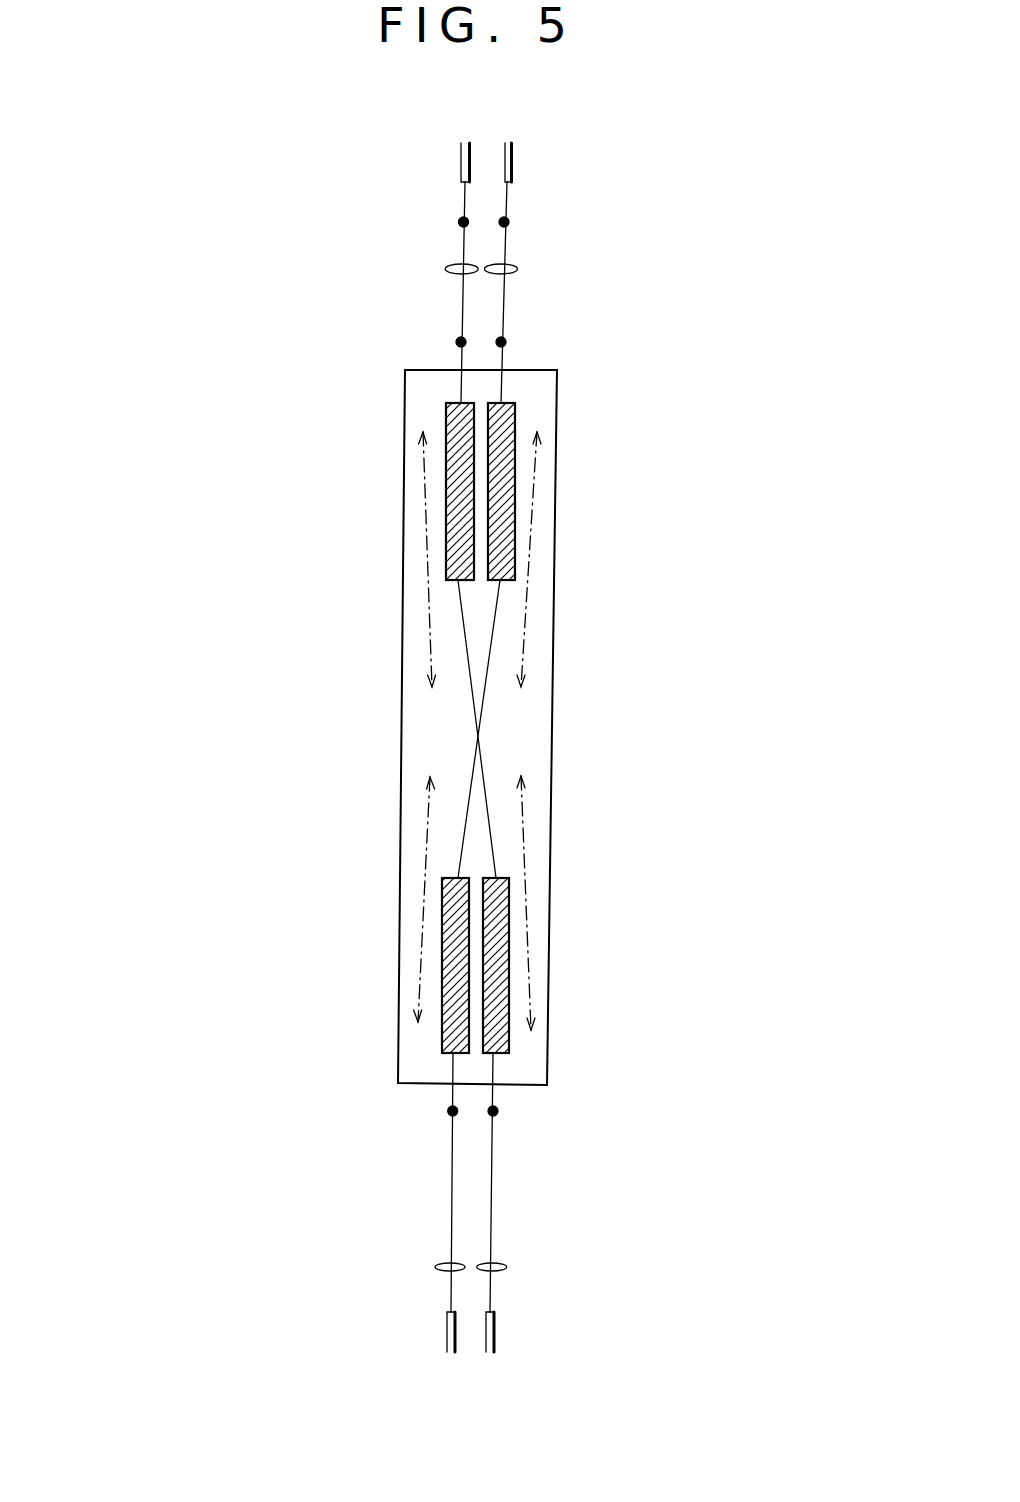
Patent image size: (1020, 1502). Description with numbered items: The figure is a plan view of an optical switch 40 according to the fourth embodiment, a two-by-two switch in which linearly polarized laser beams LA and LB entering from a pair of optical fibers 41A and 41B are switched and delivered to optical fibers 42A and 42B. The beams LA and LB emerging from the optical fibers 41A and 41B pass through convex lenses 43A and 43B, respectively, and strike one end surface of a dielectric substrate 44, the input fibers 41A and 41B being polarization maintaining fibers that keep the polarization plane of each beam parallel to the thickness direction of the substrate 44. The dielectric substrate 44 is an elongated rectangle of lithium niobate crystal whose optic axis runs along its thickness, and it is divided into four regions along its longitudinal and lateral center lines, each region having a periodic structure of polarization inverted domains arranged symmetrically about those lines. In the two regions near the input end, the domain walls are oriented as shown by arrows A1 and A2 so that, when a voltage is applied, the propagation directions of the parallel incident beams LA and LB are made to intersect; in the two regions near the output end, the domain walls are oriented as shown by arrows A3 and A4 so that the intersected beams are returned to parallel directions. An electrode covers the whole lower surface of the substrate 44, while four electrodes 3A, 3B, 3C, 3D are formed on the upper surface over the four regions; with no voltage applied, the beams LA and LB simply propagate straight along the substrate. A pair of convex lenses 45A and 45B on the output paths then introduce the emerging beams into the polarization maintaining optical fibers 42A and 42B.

The optical switch 40 is at (200, 1263).
The optical fiber 41A is at (461, 157).
The optical fiber 41B is at (512, 158).
The optical fiber 42A is at (446, 1328).
The optical fiber 42B is at (496, 1328).
The convex lens 43A is at (445, 267).
The convex lens 43B is at (517, 267).
The dielectric substrate 44 is at (545, 390).
The convex lens 45A is at (437, 1265).
The convex lens 45B is at (505, 1267).
The electrode 3A is at (452, 457).
The electrode 3B is at (503, 495).
The electrode 3C is at (452, 917).
The electrode 3D is at (508, 930).
The arrow A1 is at (430, 608).
The arrow A2 is at (527, 607).
The arrow A3 is at (427, 840).
The arrow A4 is at (523, 833).
The laser beam LA is at (462, 317).
The laser beam LB is at (503, 318).